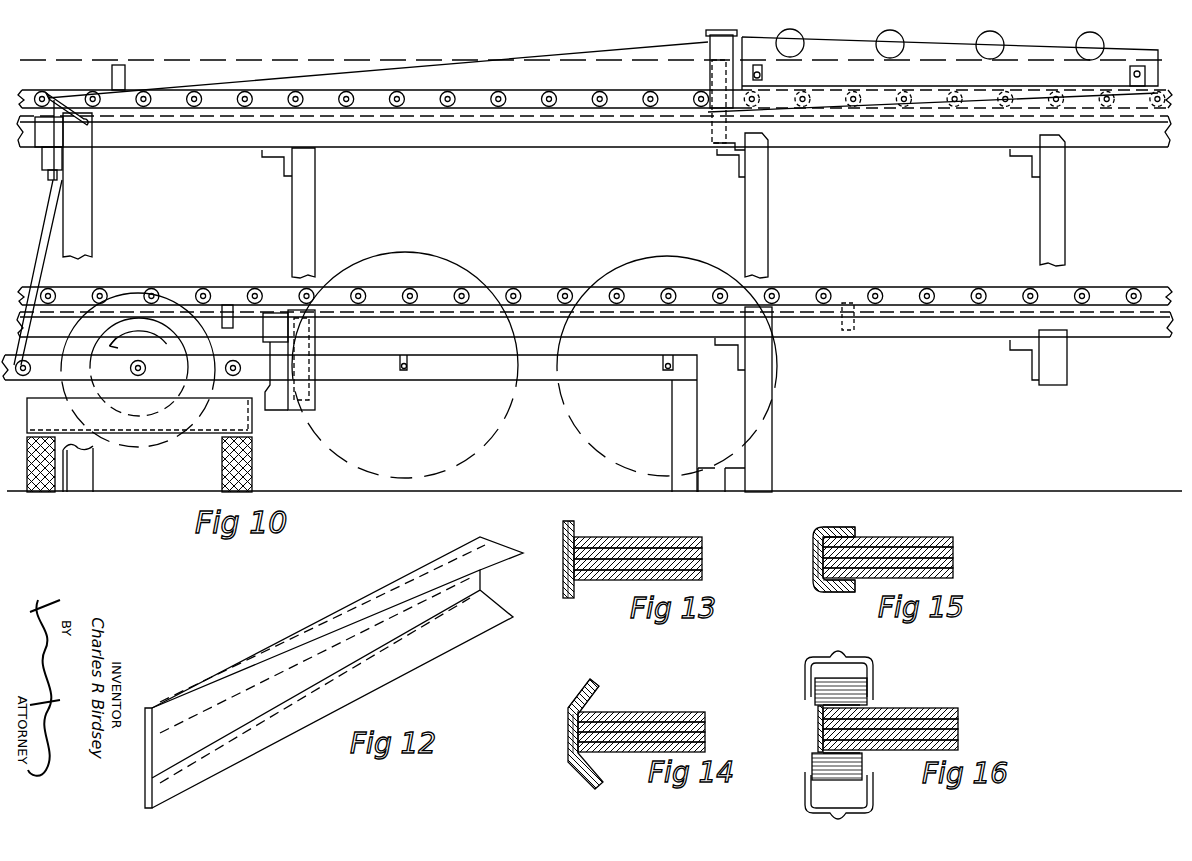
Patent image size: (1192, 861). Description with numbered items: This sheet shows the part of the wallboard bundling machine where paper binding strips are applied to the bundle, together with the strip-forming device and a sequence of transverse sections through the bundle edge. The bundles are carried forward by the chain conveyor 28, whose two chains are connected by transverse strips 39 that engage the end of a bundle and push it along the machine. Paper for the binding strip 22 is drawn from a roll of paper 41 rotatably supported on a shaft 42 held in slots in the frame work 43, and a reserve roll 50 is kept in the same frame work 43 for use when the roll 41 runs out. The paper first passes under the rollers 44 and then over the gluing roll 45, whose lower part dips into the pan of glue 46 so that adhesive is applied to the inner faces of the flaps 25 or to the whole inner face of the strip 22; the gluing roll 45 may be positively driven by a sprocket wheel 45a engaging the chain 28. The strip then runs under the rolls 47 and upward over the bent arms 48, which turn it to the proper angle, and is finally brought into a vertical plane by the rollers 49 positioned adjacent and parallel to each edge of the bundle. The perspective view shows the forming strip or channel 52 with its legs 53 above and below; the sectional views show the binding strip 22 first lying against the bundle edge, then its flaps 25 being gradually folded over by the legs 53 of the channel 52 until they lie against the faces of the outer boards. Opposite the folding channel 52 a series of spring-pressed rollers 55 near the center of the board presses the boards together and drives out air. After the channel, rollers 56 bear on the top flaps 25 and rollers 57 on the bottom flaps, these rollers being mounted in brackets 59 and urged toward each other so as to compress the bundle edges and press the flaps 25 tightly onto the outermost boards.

In FIG. 13, the binding strip 22 is at (567, 560).
In FIG. 14, the binding strip 22 is at (565, 734).
In FIG. 15, the binding strip 22 is at (812, 555).
In FIG. 16, the binding strip 22 is at (818, 738).
In FIG. 13, the flaps 25 is at (577, 582).
In FIG. 14, the flaps 25 is at (598, 696).
In FIG. 15, the flaps 25 is at (856, 534).
In FIG. 16, the flaps 25 is at (863, 697).
In FIG. 10, the chain conveyor 28 is at (585, 106).
In FIG. 10, the transverse strips 39 is at (125, 75).
In FIG. 10, the roll of paper 41 is at (407, 486).
In FIG. 10, the shaft 42 is at (413, 470).
In FIG. 10, the frame work 43 is at (585, 372).
In FIG. 10, the rollers 44 is at (260, 388).
In FIG. 10, the gluing roll 45 is at (136, 413).
In FIG. 10, the sprocket wheel 45a is at (165, 445).
In FIG. 10, the pan of glue 46 is at (200, 430).
In FIG. 10, the rolls 47 is at (15, 366).
In FIG. 10, the arms 48 is at (85, 125).
In FIG. 10, the rollers 49 is at (707, 77).
In FIG. 10, the reserve roll 50 is at (659, 472).
In FIG. 10, the forming strip or channel 52 is at (962, 75).
In FIG. 12, the forming strip or channel 52 is at (238, 710).
In FIG. 13, the forming strip or channel 52 is at (562, 585).
In FIG. 14, the forming strip or channel 52 is at (567, 752).
In FIG. 15, the forming strip or channel 52 is at (813, 582).
In FIG. 12, the legs 53 is at (452, 575).
In FIG. 14, the legs 53 is at (586, 694).
In FIG. 15, the legs 53 is at (845, 591).
In FIG. 10, the rollers 55 is at (872, 55).
In FIG. 16, the rollers 56 is at (840, 698).
In FIG. 16, the rollers 57 is at (823, 768).
In FIG. 16, the brackets 59 is at (873, 666).